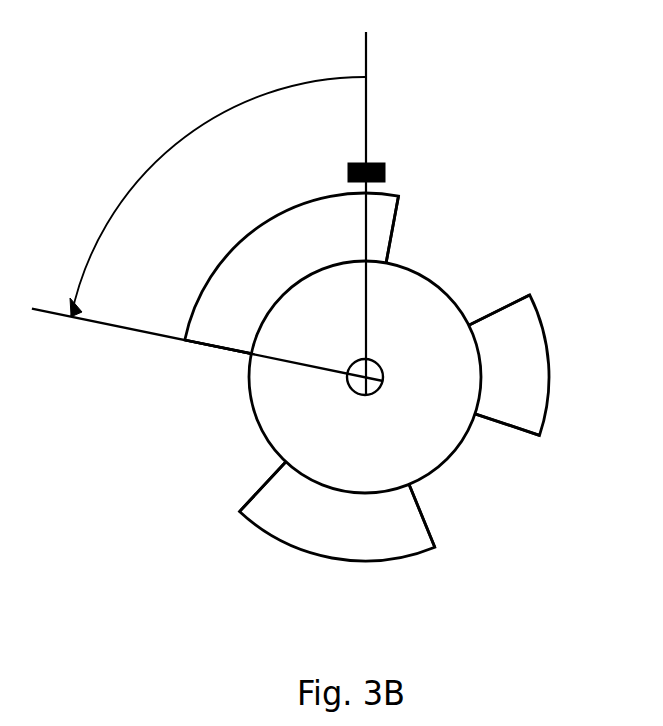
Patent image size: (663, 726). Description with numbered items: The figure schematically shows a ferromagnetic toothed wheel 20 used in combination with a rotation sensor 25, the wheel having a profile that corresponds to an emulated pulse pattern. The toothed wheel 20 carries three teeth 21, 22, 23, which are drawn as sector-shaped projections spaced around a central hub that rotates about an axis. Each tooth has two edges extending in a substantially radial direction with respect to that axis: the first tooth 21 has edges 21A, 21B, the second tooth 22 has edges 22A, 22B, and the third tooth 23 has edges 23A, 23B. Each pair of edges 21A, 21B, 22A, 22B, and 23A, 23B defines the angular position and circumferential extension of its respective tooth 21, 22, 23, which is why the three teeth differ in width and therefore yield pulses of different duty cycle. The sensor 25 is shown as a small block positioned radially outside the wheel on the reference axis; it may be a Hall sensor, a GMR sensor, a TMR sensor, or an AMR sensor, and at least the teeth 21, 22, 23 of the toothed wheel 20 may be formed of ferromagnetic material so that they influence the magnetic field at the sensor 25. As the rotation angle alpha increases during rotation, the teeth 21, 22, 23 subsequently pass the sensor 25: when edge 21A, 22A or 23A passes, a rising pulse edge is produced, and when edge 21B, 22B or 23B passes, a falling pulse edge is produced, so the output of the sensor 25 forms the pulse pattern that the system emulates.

The toothed wheel 20 is at (513, 127).
The tooth 21 is at (270, 215).
The edge of tooth 21 21A is at (208, 352).
The edge of tooth 21 21B is at (393, 230).
The tooth 22 is at (552, 372).
The edge of tooth 22 22A is at (502, 302).
The edge of tooth 22 22B is at (513, 427).
The tooth 23 is at (285, 545).
The edge of tooth 23 23A is at (427, 517).
The edge of tooth 23 23B is at (255, 493).
The rotation sensor 25 is at (385, 172).